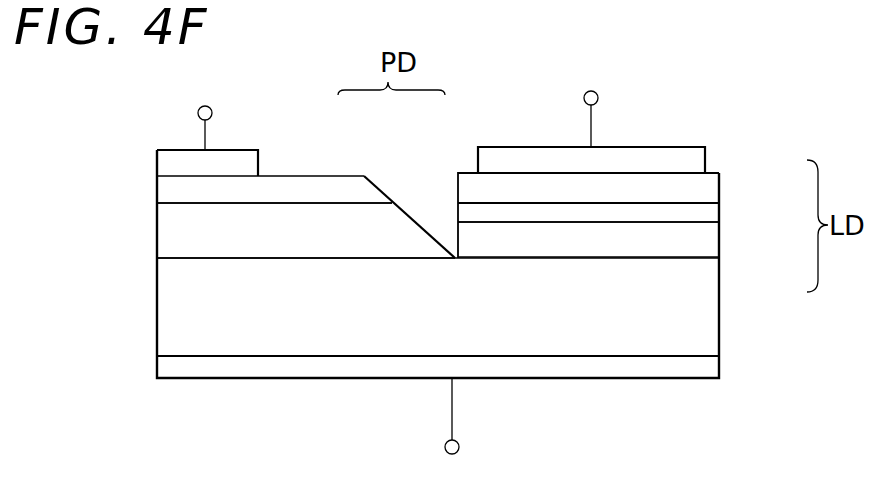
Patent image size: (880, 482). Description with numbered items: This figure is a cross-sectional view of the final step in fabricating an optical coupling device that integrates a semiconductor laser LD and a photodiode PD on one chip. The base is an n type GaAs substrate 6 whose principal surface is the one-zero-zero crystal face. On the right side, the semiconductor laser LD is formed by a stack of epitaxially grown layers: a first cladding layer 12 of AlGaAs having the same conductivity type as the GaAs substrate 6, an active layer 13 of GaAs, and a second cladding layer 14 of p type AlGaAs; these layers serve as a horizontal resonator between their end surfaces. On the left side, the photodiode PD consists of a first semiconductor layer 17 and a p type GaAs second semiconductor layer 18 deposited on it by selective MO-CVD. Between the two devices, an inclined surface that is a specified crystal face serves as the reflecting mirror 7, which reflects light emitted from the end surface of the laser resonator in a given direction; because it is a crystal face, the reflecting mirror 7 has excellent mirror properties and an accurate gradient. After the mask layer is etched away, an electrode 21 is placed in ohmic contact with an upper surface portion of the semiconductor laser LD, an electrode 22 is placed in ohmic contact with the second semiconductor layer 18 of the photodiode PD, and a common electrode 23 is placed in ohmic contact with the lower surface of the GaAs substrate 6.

The GaAs substrate 6 is at (698, 314).
The reflecting mirror 7 is at (412, 208).
The first cladding layer 12 is at (698, 242).
The active layer 13 is at (698, 212).
The second cladding layer 14 is at (698, 187).
The first semiconductor layer 17 is at (387, 217).
The second semiconductor layer 18 is at (342, 183).
The electrode of the semiconductor laser 21 is at (658, 158).
The electrode of the photodiode 22 is at (240, 160).
The common electrode 23 is at (567, 365).